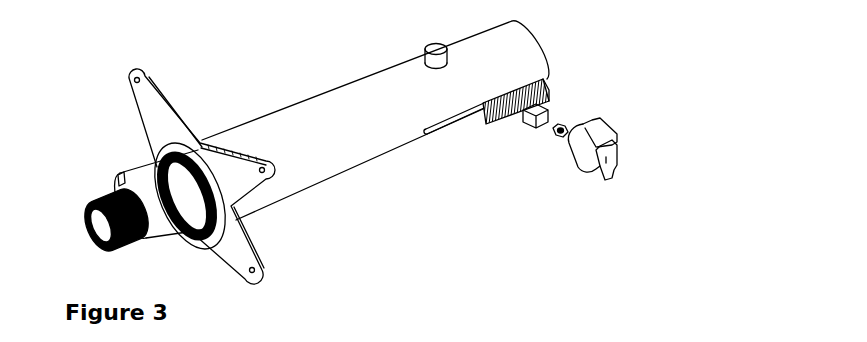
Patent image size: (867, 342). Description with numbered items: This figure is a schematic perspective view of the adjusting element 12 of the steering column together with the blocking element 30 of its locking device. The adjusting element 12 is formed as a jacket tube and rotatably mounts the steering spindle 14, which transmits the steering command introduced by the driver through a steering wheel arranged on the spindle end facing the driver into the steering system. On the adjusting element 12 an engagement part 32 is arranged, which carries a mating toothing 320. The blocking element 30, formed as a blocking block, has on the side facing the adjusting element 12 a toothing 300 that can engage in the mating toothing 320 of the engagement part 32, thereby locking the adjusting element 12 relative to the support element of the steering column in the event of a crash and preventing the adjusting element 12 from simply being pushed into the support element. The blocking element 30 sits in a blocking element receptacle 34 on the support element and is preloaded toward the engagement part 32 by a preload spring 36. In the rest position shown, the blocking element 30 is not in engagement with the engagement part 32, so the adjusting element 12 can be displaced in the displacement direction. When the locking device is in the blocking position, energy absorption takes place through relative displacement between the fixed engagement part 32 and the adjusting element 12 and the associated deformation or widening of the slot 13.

The adjusting element 12 is at (298, 172).
The slot 13 is at (443, 128).
The steering spindle 14 is at (160, 220).
The blocking element 30 is at (548, 105).
The engagement part 32 is at (484, 123).
The blocking element receptacle 34 is at (613, 153).
The preload spring 36 is at (619, 122).
The toothing 300 is at (550, 93).
The mating toothing 320 is at (550, 82).